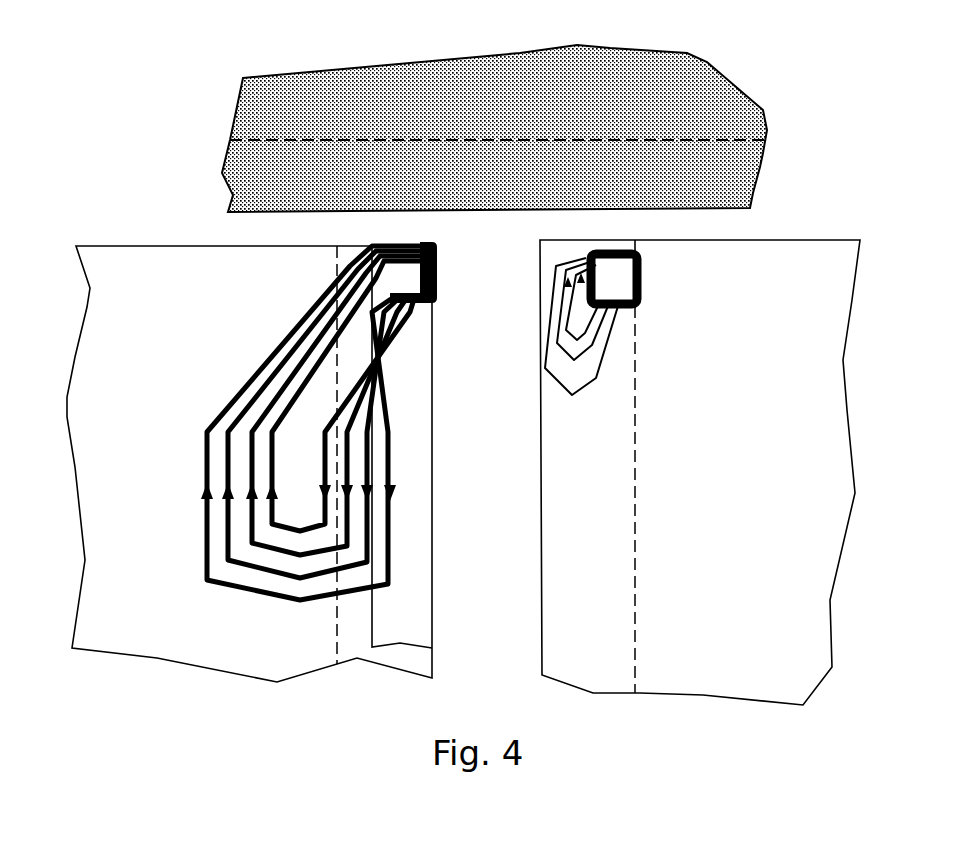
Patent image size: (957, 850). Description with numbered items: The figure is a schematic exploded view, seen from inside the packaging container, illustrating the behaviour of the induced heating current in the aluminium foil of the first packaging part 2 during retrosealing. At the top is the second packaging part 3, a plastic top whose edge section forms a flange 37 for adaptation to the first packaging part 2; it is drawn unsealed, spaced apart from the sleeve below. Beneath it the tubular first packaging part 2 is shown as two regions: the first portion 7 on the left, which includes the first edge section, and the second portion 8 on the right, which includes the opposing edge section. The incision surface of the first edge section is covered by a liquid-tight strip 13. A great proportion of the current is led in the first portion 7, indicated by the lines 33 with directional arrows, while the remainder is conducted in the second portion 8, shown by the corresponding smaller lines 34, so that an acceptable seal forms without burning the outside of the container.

The first packaging part 2 is at (456, 472).
The second packaging part 3 is at (590, 77).
The first portion 7 is at (110, 382).
The second portion 8 is at (815, 318).
The strip 13 is at (410, 489).
The lines 33 is at (298, 299).
The lines 34 is at (655, 280).
The flange 37 is at (398, 173).